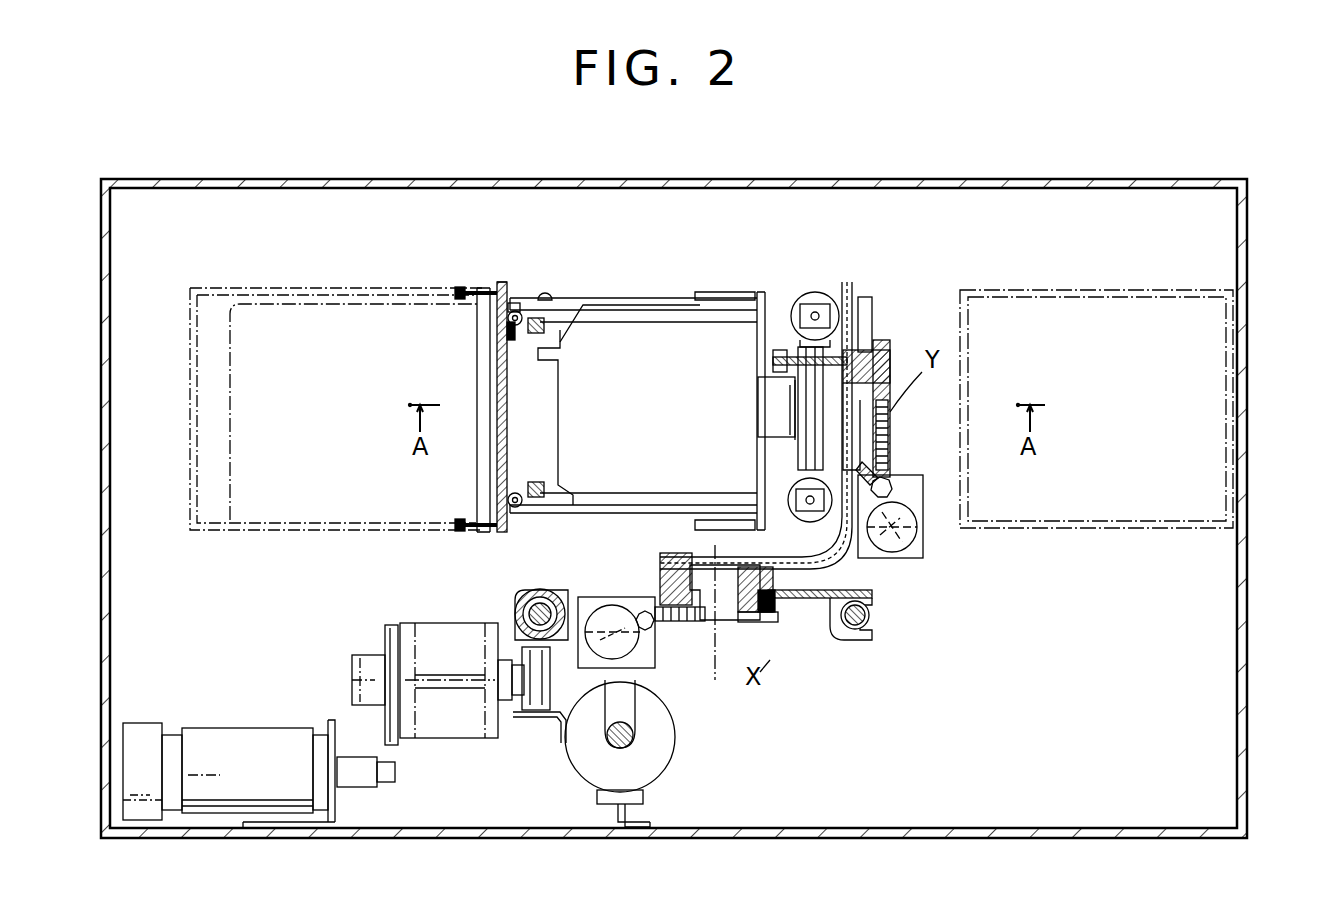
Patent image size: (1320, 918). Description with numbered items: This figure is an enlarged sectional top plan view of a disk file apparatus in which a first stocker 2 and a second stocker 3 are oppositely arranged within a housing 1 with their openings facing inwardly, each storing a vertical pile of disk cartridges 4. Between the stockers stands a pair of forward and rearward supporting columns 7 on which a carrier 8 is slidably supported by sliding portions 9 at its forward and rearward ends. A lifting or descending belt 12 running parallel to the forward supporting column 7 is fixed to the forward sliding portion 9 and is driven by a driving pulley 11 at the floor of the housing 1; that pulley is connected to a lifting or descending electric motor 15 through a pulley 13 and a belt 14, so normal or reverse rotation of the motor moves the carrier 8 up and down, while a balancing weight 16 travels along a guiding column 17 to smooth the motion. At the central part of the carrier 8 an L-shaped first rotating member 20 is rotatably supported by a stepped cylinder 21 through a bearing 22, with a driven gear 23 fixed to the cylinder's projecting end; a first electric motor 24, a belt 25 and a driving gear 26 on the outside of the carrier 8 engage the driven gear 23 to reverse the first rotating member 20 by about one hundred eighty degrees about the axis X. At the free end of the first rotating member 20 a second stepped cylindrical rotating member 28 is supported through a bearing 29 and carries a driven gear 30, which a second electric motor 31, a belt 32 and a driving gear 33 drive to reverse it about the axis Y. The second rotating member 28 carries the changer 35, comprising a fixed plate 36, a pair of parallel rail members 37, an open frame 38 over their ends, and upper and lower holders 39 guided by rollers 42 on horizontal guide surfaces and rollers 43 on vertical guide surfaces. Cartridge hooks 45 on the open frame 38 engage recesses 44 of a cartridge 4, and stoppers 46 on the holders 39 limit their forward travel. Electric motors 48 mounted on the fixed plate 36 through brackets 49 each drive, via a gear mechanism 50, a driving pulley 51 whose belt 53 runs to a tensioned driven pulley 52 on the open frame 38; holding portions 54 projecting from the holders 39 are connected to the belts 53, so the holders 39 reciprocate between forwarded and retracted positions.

The housing 1 is at (1030, 179).
The first stocker 2 is at (190, 420).
The second stocker 3 is at (1226, 445).
The disk cartridge 4 is at (335, 300).
The supporting column 7 is at (520, 610).
The carrier 8 is at (805, 600).
The sliding portion 9 is at (530, 598).
The driving pulley 11 is at (515, 712).
The lifting or descending belt 12 is at (538, 712).
The pulley 13 is at (385, 640).
The belt 14 is at (390, 750).
The lifting or descending electric motor 15 is at (200, 805).
The balancing weight 16 is at (675, 740).
The guiding column 17 is at (630, 745).
The first rotating member 20 is at (850, 562).
The stepped cylinder 21 is at (662, 575).
The bearing 22 is at (768, 625).
The driven gear 23 is at (712, 652).
The first electric motor 24 is at (603, 605).
The belt 25 is at (640, 630).
The driving gear 26 is at (652, 628).
The second rotating member 28 is at (888, 450).
The bearing 29 is at (872, 345).
The driven gear 30 is at (890, 418).
The second electric motor 31 is at (920, 540).
The belt 32 is at (915, 530).
The driving gear 33 is at (895, 482).
The changer 35 is at (502, 282).
The fixed plate 36 is at (848, 300).
The rail member 37 is at (595, 300).
The open frame 38 is at (497, 290).
The holder 39 is at (560, 397).
The roller 42 is at (512, 302).
The roller 43 is at (545, 298).
The recess 44 is at (462, 293).
The cartridge hook 45 is at (470, 290).
The stopper 46 is at (505, 332).
The electric motor 48 is at (758, 410).
The bracket 49 is at (795, 455).
The gear mechanism 50 is at (773, 360).
The driving pulley 51 is at (820, 300).
The driven pulley 52 is at (508, 318).
The belt 53 is at (635, 305).
The holding portion 54 is at (545, 328).